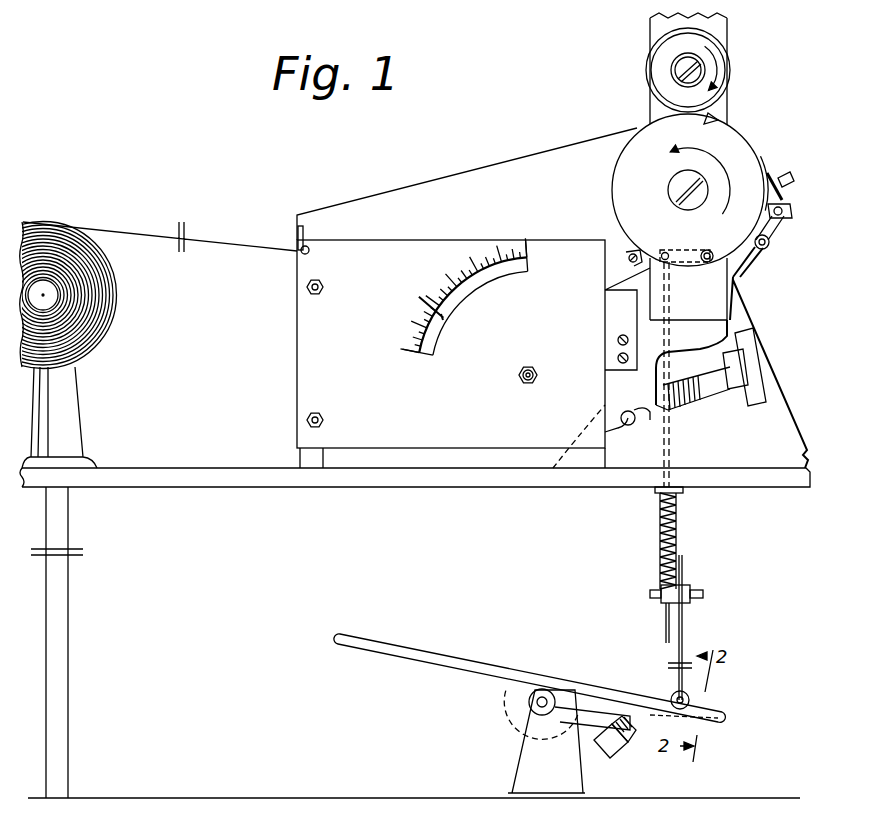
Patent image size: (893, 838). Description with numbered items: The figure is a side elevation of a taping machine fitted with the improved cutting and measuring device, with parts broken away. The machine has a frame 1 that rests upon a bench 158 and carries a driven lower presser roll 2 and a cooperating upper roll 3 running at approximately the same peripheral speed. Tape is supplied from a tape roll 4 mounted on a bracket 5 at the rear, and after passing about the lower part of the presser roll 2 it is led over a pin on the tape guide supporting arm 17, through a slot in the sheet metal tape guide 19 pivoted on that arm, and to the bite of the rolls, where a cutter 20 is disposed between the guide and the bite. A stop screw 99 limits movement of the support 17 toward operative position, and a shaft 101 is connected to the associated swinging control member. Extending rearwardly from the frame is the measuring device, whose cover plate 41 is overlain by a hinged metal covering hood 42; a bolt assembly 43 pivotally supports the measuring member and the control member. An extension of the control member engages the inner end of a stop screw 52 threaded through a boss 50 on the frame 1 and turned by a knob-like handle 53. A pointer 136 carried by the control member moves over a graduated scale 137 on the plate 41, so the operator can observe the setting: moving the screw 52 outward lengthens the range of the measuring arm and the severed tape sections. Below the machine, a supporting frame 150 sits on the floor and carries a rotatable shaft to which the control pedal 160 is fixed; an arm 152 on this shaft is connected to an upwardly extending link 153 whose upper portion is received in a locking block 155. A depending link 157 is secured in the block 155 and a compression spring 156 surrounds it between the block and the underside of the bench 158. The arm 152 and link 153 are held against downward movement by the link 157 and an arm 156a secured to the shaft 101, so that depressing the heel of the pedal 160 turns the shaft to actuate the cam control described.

The frame 1 is at (738, 308).
The lower presser roll 2 is at (743, 148).
The upper roll 3 is at (723, 68).
The tape roll 4 is at (102, 336).
The bracket 5 is at (65, 404).
The tape guide supporting arm 17 is at (786, 216).
The sheet metal tape guide 19 is at (770, 172).
The cutter 20 is at (720, 124).
The cover plate 41 is at (312, 327).
The hinged metal covering hood 42 is at (411, 186).
The bolt assembly 43 is at (537, 386).
The boss 50 is at (648, 412).
The stop screw 52 is at (712, 382).
The knob-like handle 53 is at (752, 348).
The stop screw 99 is at (631, 262).
The shaft 101 is at (713, 264).
The pointer 136 is at (445, 318).
The graduated scale 137 is at (446, 266).
The supporting frame 150 is at (522, 763).
The arm 152 is at (707, 710).
The link 153 is at (684, 642).
The locking block 155 is at (690, 585).
The compression spring 156 is at (672, 533).
The arm 156a is at (690, 252).
The depending link 157 is at (670, 620).
The bench 158 is at (732, 488).
The control pedal 160 is at (507, 668).